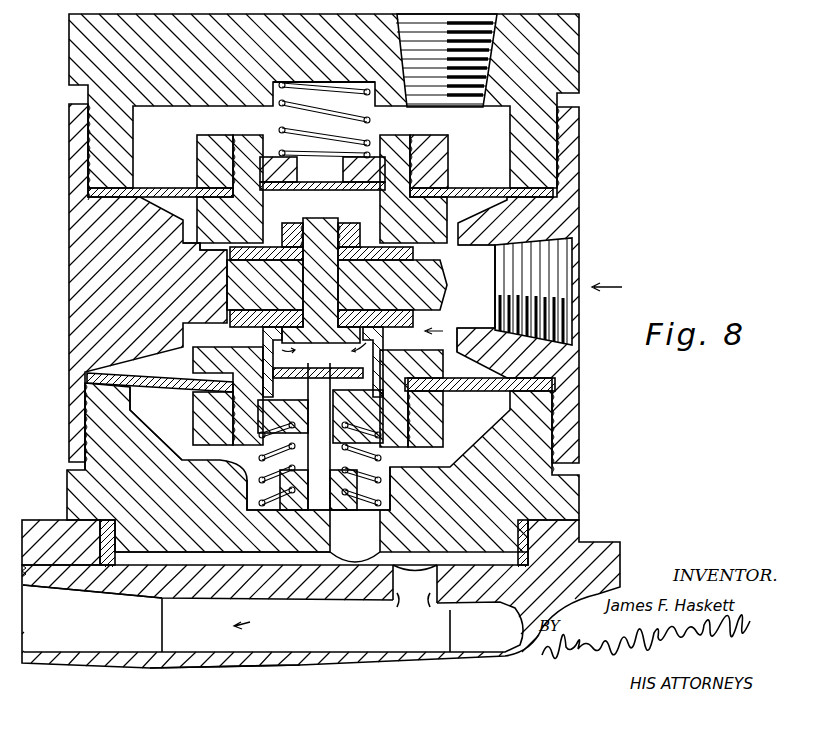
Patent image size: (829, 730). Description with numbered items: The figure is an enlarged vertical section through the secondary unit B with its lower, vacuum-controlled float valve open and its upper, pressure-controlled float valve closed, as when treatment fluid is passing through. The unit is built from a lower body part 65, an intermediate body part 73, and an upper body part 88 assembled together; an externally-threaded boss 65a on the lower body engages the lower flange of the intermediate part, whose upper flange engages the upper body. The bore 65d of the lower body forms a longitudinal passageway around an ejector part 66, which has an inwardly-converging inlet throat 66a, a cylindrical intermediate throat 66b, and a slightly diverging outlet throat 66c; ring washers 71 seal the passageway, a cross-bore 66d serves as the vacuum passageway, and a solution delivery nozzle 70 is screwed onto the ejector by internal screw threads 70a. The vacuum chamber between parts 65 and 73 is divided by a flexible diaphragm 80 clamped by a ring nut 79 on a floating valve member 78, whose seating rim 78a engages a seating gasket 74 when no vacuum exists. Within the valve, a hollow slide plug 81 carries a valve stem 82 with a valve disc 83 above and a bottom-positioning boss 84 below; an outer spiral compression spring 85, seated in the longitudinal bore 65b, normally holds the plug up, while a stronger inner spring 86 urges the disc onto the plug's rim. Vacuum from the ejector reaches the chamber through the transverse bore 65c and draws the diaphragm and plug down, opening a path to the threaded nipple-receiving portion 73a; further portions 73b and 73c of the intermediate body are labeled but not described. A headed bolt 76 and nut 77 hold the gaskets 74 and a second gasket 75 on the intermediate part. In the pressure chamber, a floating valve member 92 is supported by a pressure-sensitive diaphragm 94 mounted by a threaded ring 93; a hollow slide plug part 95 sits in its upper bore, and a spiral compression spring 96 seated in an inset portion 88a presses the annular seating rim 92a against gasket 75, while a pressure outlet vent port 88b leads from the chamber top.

The upper body part 88 is at (580, 51).
The inset portion 88a is at (332, 74).
The pressure outlet vent port 88b is at (407, 28).
The spiral compression spring 96 is at (296, 102).
The hollow slide plug part 95 is at (269, 158).
The floating valve member 92 is at (398, 146).
The threaded ring 93 is at (448, 146).
The pressure-sensitive diaphragm 94 is at (494, 188).
The annular seating rim 92a is at (292, 224).
The headed bolt 76 is at (325, 217).
The nut 77 is at (349, 223).
The disc-like seating gasket 75 is at (358, 245).
The disc-like seating gasket 74 is at (276, 328).
The intermediate body part 73 is at (69, 283).
The threaded nipple-receiving portion 73a is at (559, 244).
The cavity 73b is at (462, 316).
The notch 73c is at (208, 250).
The secondary unit B is at (69, 245).
The hollow slide plug 81 is at (377, 392).
The valve disc 83 is at (295, 369).
The floating valve member 78 is at (440, 371).
The upwardly-projecting seating rim 78a is at (251, 345).
The flexible diaphragm 80 is at (167, 386).
The internally-threaded ring nut 79 is at (193, 420).
The valve stem 82 is at (310, 422).
The outer spiral compression spring 85 is at (258, 457).
The inner spiral spring 86 is at (383, 442).
The bottom-positioning boss 84 is at (355, 510).
The lower body part 65 is at (577, 491).
The externally-threaded boss 65a is at (100, 404).
The longitudinal bore 65b is at (248, 476).
The transverse bore 65c is at (384, 558).
The bore 65d is at (220, 563).
The solution delivery nozzle 70 is at (34, 519).
The ring washers 71 is at (100, 523).
The ejector part 66 is at (612, 564).
The internal screw threads 70a is at (78, 586).
The inlet throat 66a is at (507, 607).
The intermediate throat 66b is at (308, 658).
The outlet throat 66c is at (135, 660).
The cross-bore 66d is at (423, 615).